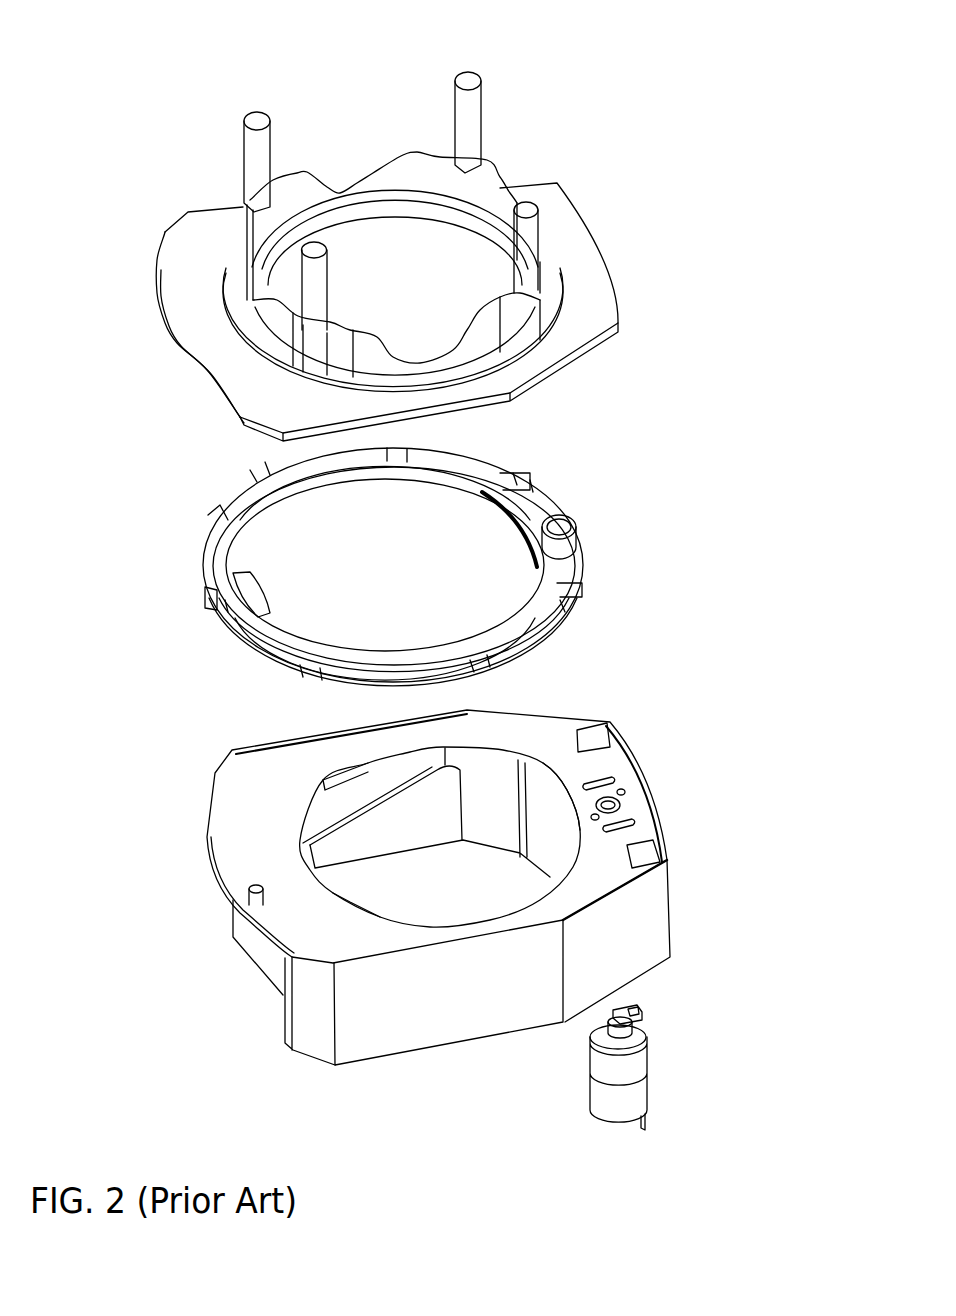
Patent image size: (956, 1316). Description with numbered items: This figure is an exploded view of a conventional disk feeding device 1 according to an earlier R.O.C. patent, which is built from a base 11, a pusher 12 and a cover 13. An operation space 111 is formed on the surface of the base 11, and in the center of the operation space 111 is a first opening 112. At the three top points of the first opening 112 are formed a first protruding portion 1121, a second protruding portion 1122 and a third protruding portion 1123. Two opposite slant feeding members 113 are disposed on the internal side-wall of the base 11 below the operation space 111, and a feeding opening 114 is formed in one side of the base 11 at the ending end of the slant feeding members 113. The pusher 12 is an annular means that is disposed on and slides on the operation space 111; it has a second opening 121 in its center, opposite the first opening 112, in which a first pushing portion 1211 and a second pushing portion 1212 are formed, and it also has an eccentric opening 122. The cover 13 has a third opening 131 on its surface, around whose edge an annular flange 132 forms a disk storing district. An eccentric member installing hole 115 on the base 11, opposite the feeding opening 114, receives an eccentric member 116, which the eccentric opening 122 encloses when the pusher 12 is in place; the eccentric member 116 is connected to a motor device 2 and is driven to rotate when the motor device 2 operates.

The disk feeding device 1 is at (101, 27).
The cover 13 is at (172, 218).
The third opening 131 is at (405, 233).
The annular flange 132 is at (482, 190).
The pusher 12 is at (197, 563).
The second opening 121 is at (445, 517).
The eccentric opening 122 is at (562, 532).
The first pushing portion 1211 is at (252, 577).
The second pushing portion 1212 is at (525, 530).
The base 11 is at (672, 920).
The operation space 111 is at (273, 760).
The first opening 112 is at (485, 767).
The slant feeding members 113 is at (420, 780).
The first protruding portion 1121 is at (307, 815).
The second protruding portion 1122 is at (355, 900).
The third protruding portion 1123 is at (560, 798).
The feeding opening 114 is at (233, 952).
The eccentric member installing hole 115 is at (622, 803).
The eccentric member 116 is at (640, 1020).
The motor device 2 is at (590, 1070).